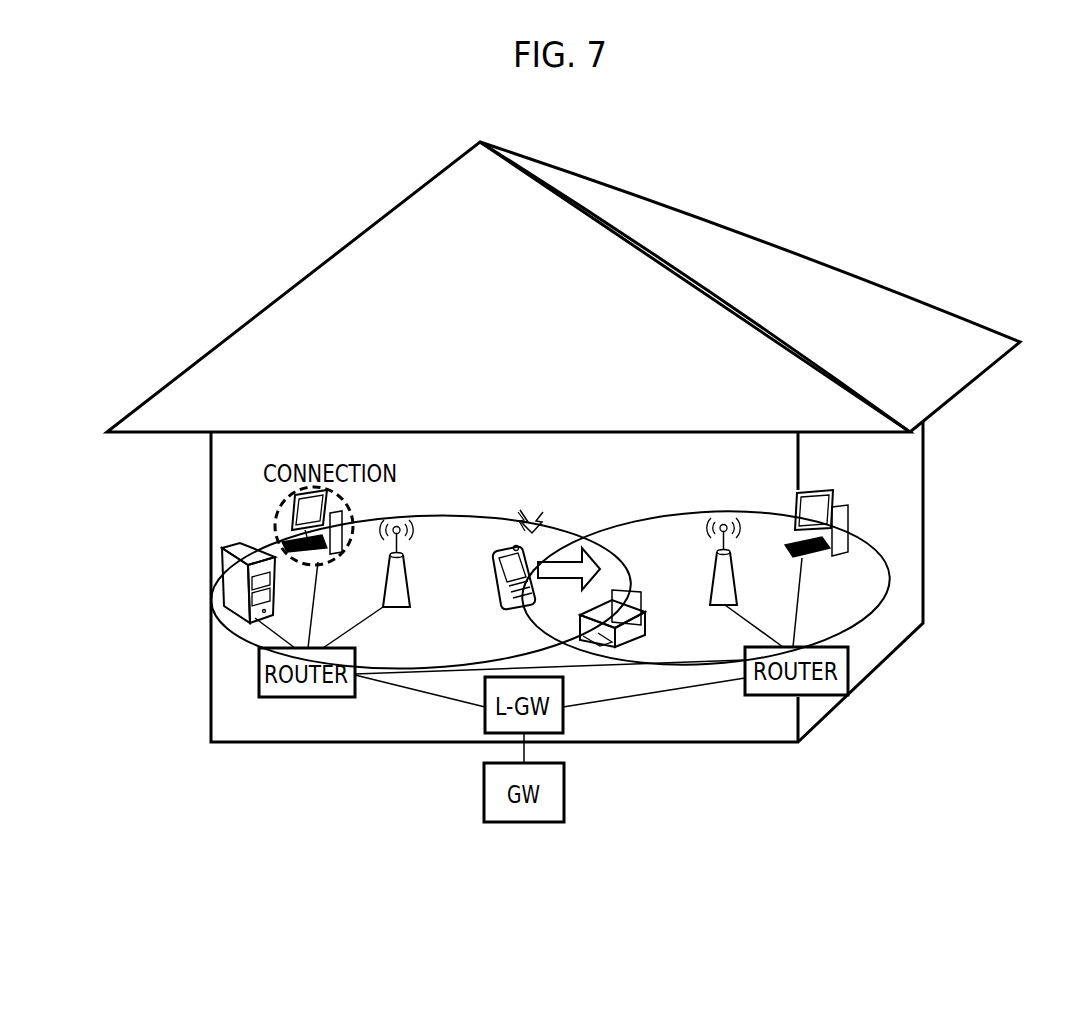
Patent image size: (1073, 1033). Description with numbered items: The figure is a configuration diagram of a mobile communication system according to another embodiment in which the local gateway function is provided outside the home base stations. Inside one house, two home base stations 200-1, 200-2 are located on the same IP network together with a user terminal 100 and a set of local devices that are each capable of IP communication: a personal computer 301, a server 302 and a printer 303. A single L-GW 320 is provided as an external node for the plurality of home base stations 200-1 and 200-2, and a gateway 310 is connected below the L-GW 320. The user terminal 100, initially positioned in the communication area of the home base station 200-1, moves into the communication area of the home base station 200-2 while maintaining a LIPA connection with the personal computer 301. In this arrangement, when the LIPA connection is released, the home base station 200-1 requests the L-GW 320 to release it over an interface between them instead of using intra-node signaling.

The user terminal 100 is at (493, 575).
The home base station 200-1 is at (408, 575).
The home base station 200-2 is at (717, 560).
The local device 301 is at (292, 500).
The local device 302 is at (222, 563).
The local device 303 is at (642, 623).
The gateway 310 is at (564, 790).
The local gateway 320 is at (563, 717).